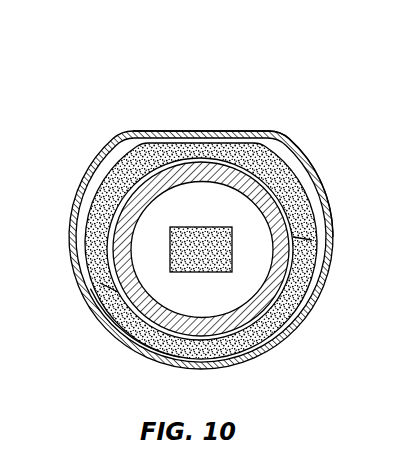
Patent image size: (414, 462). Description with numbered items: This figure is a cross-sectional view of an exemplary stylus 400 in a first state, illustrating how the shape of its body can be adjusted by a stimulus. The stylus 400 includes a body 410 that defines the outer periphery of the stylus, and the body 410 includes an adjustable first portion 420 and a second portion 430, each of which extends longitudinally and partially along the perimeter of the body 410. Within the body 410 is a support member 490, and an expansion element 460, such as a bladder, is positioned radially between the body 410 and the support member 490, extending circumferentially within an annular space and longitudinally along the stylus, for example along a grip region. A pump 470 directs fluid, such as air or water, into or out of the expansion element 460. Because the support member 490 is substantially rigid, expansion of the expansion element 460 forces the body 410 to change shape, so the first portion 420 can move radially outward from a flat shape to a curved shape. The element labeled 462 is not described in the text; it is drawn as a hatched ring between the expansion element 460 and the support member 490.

The stylus 400 is at (86, 84).
The body 410 is at (80, 172).
The first portion 420 is at (247, 130).
The expansion element 460 is at (317, 179).
The inner hatched ring member 462 is at (313, 243).
The second portion 430 is at (305, 330).
The pump 470 is at (200, 227).
The support member 490 is at (98, 292).